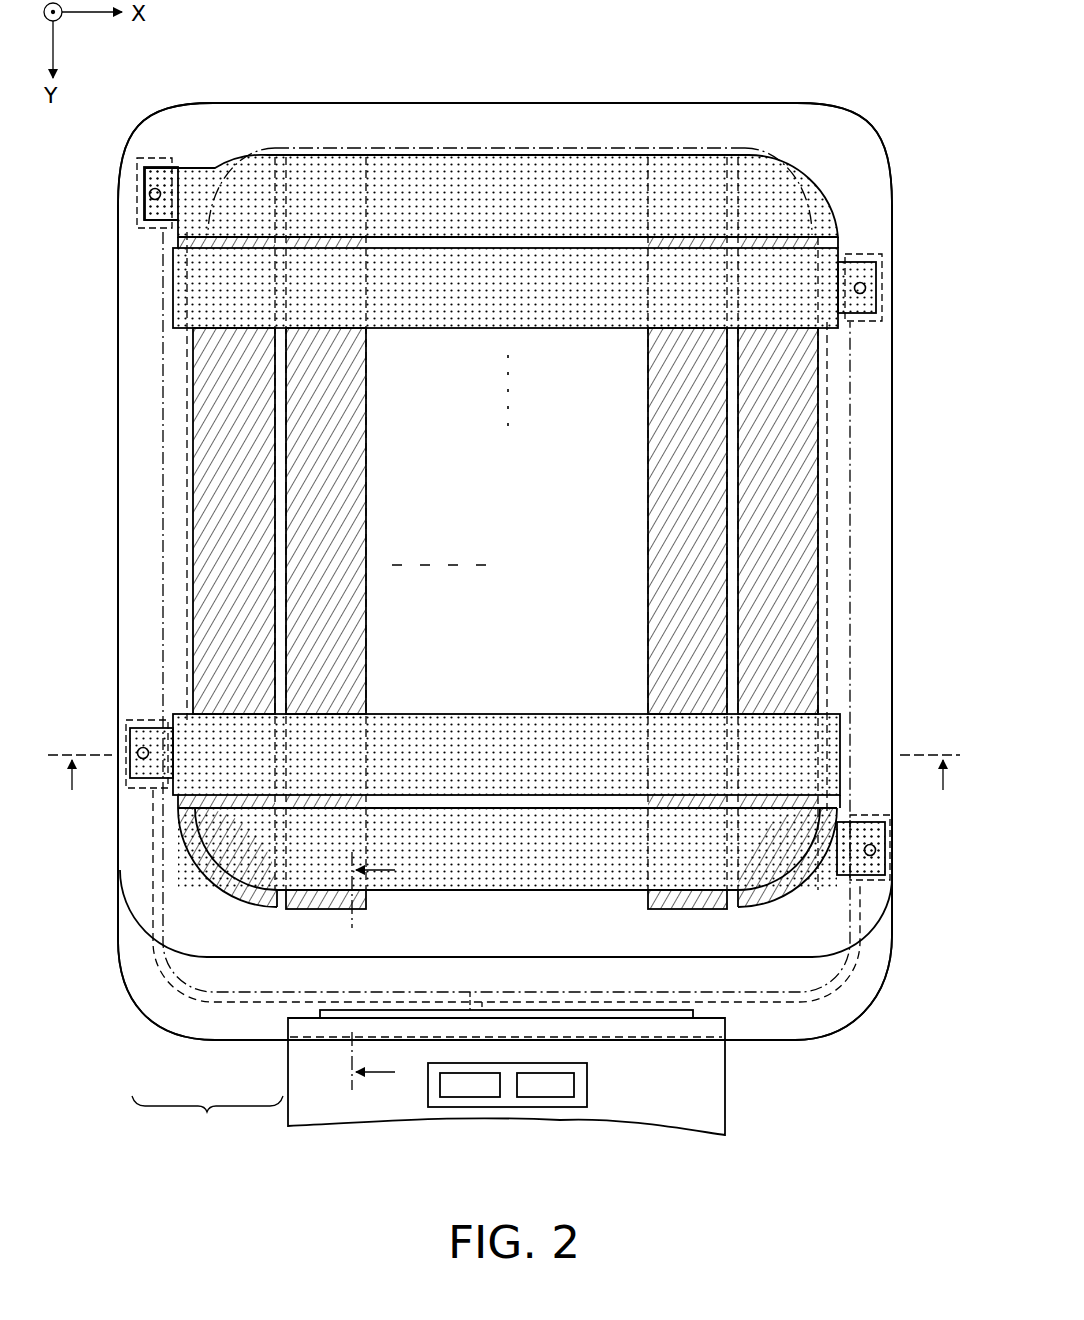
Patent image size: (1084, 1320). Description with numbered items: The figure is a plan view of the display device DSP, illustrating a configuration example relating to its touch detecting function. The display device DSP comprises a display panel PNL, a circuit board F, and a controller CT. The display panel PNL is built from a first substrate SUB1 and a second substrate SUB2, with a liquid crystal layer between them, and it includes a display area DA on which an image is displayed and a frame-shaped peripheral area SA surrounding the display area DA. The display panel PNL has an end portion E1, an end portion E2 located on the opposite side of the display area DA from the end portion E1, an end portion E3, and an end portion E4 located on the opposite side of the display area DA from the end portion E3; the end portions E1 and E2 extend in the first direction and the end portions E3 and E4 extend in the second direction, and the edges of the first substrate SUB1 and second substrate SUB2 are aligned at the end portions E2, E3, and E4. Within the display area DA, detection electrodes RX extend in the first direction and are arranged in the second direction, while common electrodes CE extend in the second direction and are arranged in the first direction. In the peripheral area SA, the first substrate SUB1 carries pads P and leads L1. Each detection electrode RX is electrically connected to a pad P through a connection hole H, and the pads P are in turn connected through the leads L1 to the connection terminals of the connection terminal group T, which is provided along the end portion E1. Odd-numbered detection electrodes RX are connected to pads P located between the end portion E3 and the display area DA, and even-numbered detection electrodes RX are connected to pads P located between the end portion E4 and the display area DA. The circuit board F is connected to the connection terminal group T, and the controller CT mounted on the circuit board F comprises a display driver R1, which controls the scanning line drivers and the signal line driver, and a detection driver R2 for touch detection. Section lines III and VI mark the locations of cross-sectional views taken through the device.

The display device DSP is at (793, 93).
The display panel PNL is at (207, 1120).
The first substrate SUB1 is at (246, 1040).
The second substrate SUB2 is at (208, 958).
The end portion E1 is at (770, 1040).
The end portion E2 is at (292, 103).
The end portion E3 is at (118, 610).
The end portion E4 is at (892, 626).
The display area DA is at (612, 178).
The peripheral area SA is at (554, 128).
The lead L1 is at (163, 413).
The pad P is at (148, 162).
The connection hole H is at (150, 195).
The detection electrode RX is at (415, 225).
The common electrode CE is at (258, 466).
The connection terminal group T is at (655, 1010).
The circuit board F is at (646, 1135).
The controller CT is at (505, 1107).
The display driver R1 is at (465, 1097).
The detection driver R2 is at (556, 1097).
The section line III is at (504, 789).
The section line VI is at (373, 988).